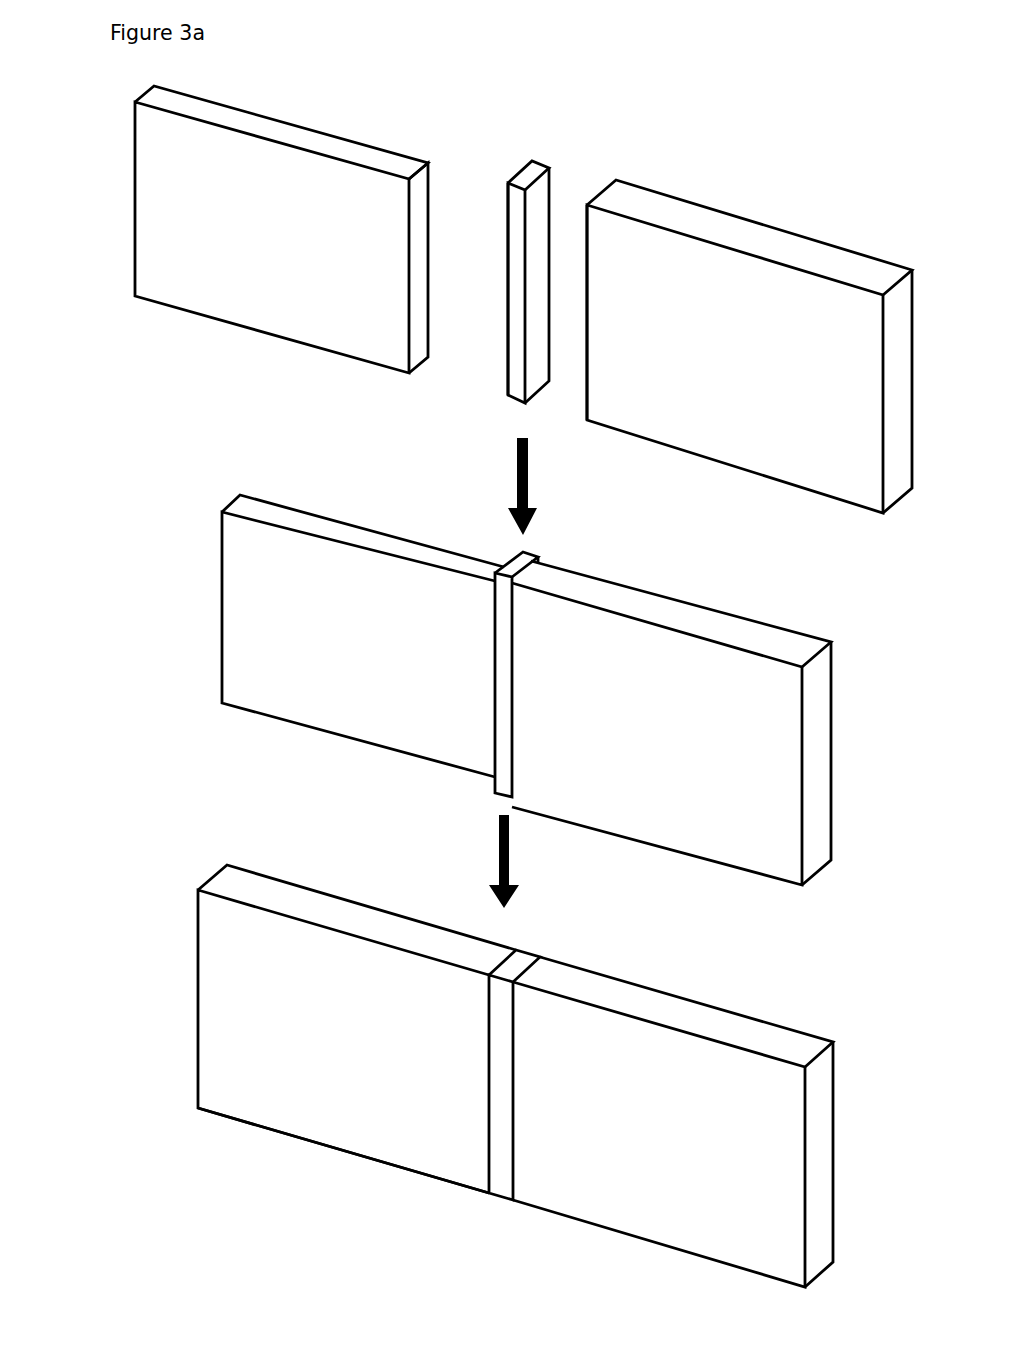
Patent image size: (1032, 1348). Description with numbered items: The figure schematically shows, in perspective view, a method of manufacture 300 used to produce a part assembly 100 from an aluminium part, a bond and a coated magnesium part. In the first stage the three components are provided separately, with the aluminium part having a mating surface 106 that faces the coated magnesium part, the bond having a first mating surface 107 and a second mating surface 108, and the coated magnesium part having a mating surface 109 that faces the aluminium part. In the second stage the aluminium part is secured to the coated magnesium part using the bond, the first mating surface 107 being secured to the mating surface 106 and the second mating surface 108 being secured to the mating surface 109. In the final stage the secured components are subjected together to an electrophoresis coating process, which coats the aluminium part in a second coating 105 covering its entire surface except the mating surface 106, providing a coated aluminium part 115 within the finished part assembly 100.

The method of manufacture 300 is at (101, 138).
The part assembly 100 is at (141, 1010).
The second coating 105 is at (386, 918).
The mating surface of the aluminium part 106 is at (420, 227).
The first mating surface of the bond 107 is at (507, 242).
The second mating surface of the bond 108 is at (538, 253).
The mating surface of the coated magnesium part 109 is at (587, 372).
The coated aluminium part 115 is at (209, 1152).